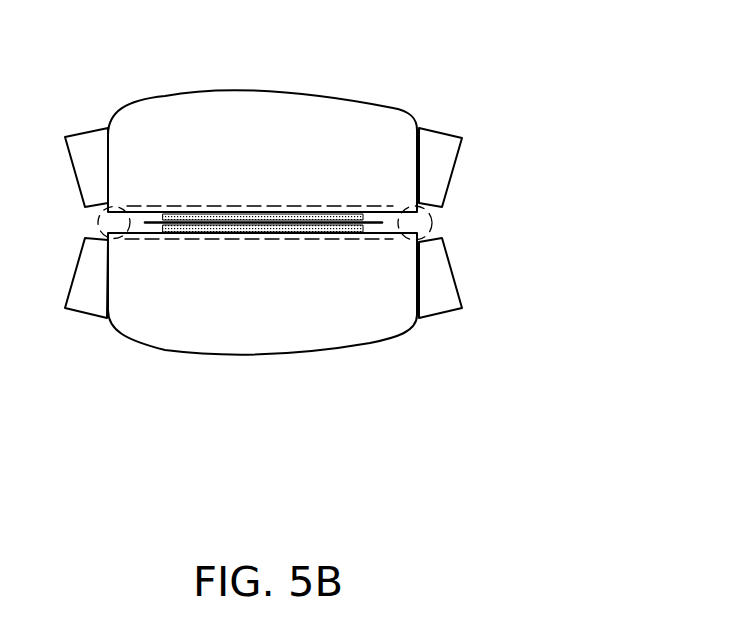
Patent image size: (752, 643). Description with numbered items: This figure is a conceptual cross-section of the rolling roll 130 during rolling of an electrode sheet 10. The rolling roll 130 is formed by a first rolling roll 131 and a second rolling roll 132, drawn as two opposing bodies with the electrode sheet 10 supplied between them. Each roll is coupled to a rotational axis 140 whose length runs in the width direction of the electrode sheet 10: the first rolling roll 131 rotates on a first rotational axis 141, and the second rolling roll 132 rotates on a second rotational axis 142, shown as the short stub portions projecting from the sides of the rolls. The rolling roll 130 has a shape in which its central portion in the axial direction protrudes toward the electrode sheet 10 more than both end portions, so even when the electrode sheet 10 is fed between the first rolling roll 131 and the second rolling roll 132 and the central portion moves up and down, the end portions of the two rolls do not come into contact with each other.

The electrode sheet 10 is at (316, 214).
The rolling roll 130 is at (262, 285).
The first rolling roll 131 is at (180, 115).
The second rolling roll 132 is at (178, 332).
The rotational axis 140 is at (269, 298).
The first rotational axis 141 is at (433, 143).
The second rotational axis 142 is at (432, 305).